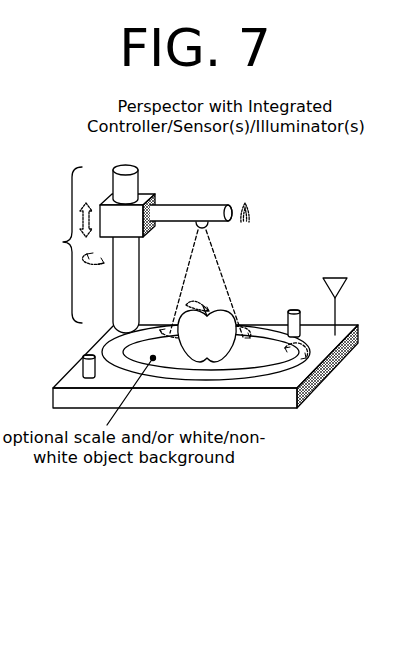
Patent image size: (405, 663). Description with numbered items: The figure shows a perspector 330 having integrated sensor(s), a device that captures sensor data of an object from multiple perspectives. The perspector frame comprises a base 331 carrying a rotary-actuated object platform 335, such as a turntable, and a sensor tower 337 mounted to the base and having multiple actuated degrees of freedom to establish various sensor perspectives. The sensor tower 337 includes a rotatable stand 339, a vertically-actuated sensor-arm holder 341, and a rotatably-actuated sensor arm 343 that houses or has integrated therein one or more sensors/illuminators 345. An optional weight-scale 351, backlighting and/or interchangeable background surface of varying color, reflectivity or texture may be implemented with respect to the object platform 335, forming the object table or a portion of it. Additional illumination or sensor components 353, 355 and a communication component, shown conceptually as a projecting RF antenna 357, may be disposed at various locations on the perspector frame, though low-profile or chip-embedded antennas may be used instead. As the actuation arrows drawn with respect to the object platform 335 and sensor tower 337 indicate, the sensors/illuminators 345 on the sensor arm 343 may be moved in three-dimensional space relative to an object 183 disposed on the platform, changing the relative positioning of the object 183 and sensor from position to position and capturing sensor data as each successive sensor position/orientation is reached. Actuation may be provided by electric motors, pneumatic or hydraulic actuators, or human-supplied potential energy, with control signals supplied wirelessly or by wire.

The object 183 is at (218, 348).
The perspector 330 is at (300, 218).
The base 331 is at (270, 408).
The object platform 335 is at (272, 370).
The sensor tower 337 is at (65, 245).
The rotatable stand 339 is at (135, 260).
The sensor-arm holder 341 is at (148, 194).
The sensor arm 343 is at (203, 206).
The sensors/illuminators 345 is at (210, 229).
The weight-scale 351 is at (252, 352).
The sensor component 353 is at (83, 355).
The sensor component 355 is at (292, 308).
The RF antenna 357 is at (338, 277).